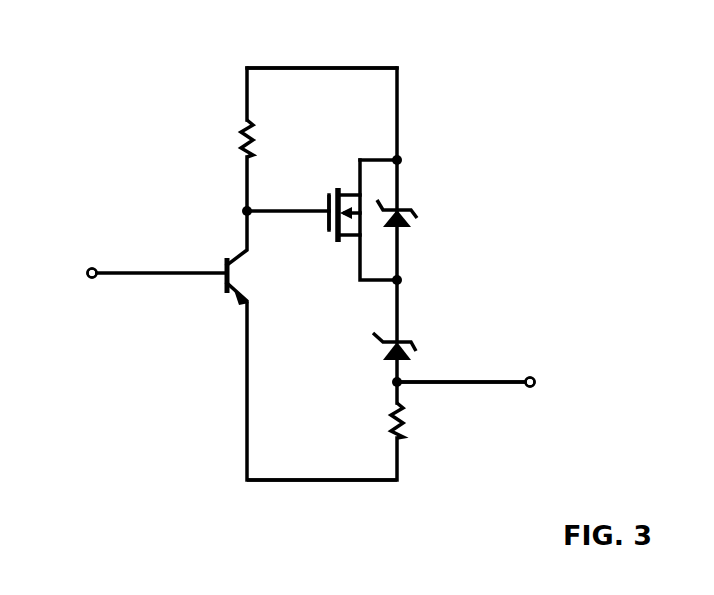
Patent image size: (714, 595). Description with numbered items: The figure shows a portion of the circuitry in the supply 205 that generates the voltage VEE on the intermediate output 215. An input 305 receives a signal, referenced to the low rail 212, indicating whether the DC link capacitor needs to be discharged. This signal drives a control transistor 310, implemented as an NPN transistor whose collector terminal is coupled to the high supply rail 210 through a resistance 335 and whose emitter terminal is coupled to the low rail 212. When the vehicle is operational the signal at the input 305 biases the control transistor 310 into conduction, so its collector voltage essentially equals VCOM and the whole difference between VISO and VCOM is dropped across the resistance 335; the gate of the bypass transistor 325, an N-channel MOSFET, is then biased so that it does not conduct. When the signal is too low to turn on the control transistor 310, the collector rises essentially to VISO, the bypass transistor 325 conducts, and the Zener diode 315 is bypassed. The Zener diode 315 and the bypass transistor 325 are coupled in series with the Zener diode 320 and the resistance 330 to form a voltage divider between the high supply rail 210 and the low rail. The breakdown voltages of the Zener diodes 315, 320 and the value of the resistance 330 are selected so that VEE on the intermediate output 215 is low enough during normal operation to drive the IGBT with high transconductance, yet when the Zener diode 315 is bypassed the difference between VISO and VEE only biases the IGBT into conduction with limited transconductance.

The supply 205 is at (532, 86).
The high supply rail 210 is at (308, 65).
The low rail 212 is at (328, 482).
The intermediate output 215 is at (467, 385).
The input 305 is at (85, 282).
The control transistor 310 is at (225, 278).
The Zener diode 315 is at (423, 218).
The Zener diode 320 is at (410, 343).
The bypass transistor 325 is at (327, 237).
The resistance 330 is at (380, 420).
The resistance 335 is at (237, 142).